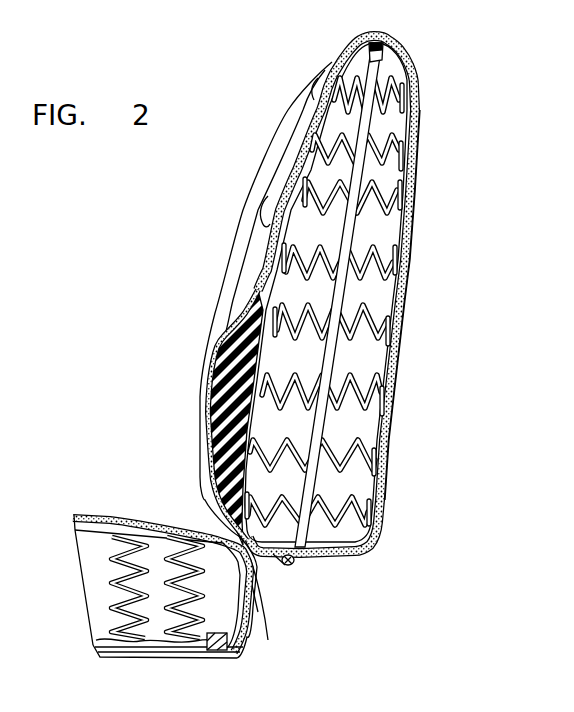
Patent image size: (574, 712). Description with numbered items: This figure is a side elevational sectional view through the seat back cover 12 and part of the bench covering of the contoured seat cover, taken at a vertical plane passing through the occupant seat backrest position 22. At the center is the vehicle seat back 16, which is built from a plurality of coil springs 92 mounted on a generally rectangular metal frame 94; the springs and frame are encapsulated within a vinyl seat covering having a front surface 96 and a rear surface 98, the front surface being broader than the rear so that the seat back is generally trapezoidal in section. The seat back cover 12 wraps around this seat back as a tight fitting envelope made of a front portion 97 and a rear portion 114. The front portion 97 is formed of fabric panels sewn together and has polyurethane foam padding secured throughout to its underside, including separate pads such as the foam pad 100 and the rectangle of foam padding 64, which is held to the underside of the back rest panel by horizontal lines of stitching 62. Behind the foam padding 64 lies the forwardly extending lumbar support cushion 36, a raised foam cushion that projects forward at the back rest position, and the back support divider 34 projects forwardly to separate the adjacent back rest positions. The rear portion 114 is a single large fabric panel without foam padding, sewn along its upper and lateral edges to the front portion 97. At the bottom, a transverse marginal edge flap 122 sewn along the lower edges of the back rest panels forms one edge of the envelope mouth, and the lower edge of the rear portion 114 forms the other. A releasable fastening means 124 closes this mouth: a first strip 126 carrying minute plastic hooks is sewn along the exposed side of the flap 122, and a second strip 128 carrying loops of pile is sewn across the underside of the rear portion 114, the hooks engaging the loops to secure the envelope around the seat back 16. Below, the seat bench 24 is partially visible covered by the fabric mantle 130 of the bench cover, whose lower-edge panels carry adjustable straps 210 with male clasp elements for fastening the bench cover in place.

The seat back cover 12 is at (321, 44).
The seat back 16 is at (405, 422).
The occupant seat backrest position 22 is at (222, 313).
The seat bench 24 is at (198, 668).
The back support divider 34 is at (220, 271).
The lumbar support cushion 36 is at (210, 414).
The horizontal lines of stitching 62 is at (337, 68).
The foam padding 64 is at (283, 166).
The coil springs 92 is at (368, 218).
The metal frame 94 is at (328, 361).
The front surface 96 is at (242, 232).
The front portion 97 is at (284, 147).
The rear surface 98 is at (392, 297).
The foam pad 100 is at (227, 343).
The rear portion 114 is at (420, 112).
The marginal edge flap 122 is at (266, 568).
The releasable fastening means 124 is at (358, 576).
The first strip 126 is at (293, 565).
The second strip 128 is at (291, 562).
The fabric mantle 130 is at (125, 508).
The straps 210 is at (168, 662).